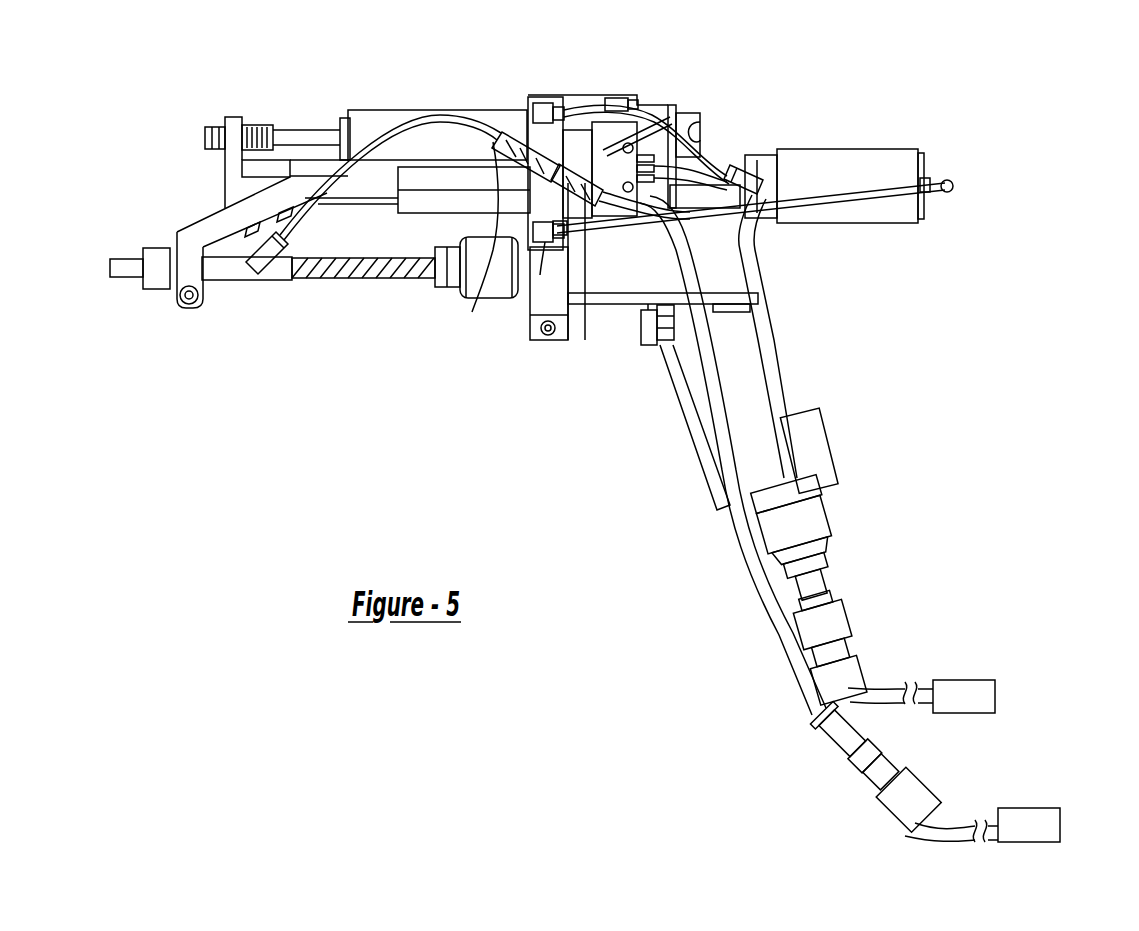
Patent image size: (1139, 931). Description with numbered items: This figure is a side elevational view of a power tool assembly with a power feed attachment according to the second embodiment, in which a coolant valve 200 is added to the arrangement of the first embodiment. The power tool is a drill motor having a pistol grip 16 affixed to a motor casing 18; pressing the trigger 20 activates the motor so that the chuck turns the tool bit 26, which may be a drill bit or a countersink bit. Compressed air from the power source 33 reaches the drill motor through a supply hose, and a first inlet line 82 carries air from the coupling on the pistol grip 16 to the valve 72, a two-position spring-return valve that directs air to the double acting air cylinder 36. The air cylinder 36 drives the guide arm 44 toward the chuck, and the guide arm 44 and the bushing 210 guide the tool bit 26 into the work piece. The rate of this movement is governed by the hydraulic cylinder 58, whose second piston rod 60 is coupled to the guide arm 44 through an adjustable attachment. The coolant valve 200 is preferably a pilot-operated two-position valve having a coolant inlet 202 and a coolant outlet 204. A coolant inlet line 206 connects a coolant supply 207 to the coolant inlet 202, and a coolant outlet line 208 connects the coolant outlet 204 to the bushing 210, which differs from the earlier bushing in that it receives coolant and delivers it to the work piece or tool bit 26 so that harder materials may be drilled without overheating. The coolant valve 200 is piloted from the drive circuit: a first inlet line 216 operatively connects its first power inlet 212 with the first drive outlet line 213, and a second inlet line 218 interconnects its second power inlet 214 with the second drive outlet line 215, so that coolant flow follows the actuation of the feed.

The pistol grip 16 is at (693, 422).
The motor casing 18 is at (607, 288).
The trigger 20 is at (647, 350).
The tool bit 26 is at (367, 265).
The power source 33 is at (947, 690).
The double acting air cylinder 36 is at (863, 163).
The guide arm 44 is at (217, 228).
The hydraulic cylinder 58 is at (382, 123).
The second piston rod 60 is at (295, 137).
The valve 72 is at (668, 115).
The first inlet line 82 is at (783, 413).
The coolant valve 200 is at (542, 137).
The coolant inlet 202 is at (585, 252).
The coolant outlet 204 is at (488, 280).
The coolant inlet line 206 is at (777, 635).
The coolant supply 207 is at (1027, 815).
The coolant outlet line 208 is at (312, 222).
The bushing 210 is at (223, 268).
The first power inlet 212 is at (527, 255).
The first drive outlet line 213 is at (867, 200).
The second power inlet 214 is at (560, 107).
The second drive outlet line 215 is at (747, 160).
The first inlet line 216 is at (697, 227).
The second inlet line 218 is at (722, 160).